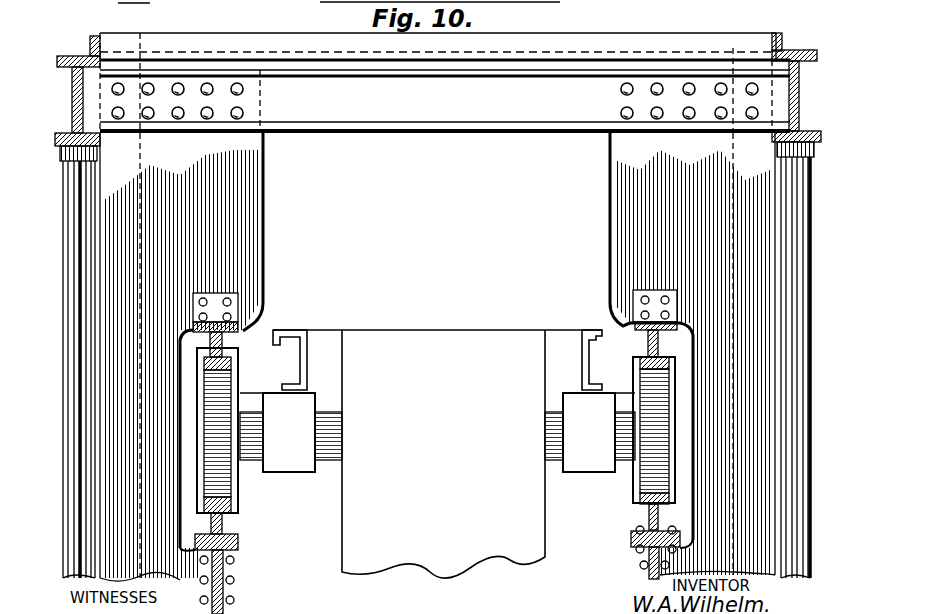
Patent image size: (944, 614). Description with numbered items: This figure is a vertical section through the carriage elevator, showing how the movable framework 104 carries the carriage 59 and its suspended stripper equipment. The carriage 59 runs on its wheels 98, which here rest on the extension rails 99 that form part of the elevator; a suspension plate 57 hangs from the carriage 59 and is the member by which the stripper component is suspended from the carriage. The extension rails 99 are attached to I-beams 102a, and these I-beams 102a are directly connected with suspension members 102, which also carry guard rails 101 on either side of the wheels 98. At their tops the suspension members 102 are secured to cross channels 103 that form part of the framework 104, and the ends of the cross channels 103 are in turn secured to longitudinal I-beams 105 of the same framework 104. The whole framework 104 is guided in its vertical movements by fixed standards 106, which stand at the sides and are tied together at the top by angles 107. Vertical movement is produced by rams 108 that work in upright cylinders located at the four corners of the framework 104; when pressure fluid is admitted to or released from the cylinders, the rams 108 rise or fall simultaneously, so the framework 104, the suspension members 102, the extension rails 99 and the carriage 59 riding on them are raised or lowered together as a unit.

The suspension plate 57 is at (343, 532).
The carriage 59 is at (302, 343).
The wheels 98 is at (222, 390).
The extension rails 99 is at (224, 525).
The guard rails 101 is at (225, 340).
The suspension members 102 is at (248, 218).
The I-beams 102a is at (228, 568).
The cross channels 103 is at (527, 105).
The framework 104 is at (433, 140).
The longitudinal I-beams 105 is at (80, 100).
The fixed standards 106 is at (125, 278).
The angles 107 is at (90, 37).
The rams 108 is at (94, 246).